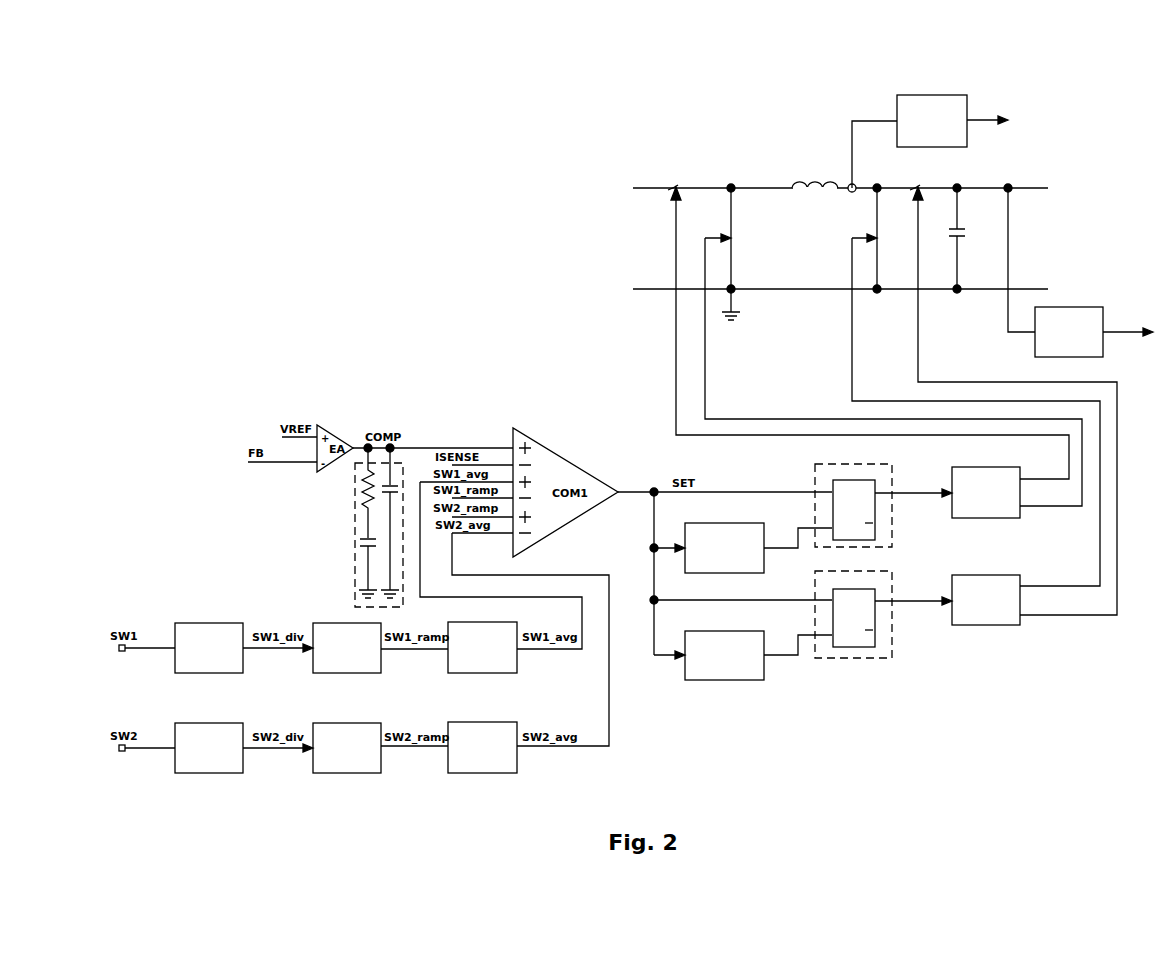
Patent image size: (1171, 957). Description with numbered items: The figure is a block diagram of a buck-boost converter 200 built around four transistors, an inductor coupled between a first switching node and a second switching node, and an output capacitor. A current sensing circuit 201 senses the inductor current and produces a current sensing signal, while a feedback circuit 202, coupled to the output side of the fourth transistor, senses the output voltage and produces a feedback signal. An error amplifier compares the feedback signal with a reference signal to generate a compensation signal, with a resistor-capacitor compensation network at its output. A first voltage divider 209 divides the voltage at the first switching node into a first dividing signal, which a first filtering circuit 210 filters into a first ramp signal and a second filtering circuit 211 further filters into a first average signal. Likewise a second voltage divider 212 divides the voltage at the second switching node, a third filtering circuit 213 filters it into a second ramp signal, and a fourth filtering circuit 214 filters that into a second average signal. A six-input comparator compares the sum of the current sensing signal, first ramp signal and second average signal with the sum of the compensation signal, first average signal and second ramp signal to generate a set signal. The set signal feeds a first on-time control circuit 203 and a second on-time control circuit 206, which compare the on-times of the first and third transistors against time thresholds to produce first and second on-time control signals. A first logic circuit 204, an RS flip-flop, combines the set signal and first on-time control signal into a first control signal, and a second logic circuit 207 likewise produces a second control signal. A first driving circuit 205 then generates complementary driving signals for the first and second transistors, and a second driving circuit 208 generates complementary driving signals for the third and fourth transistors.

The buck-boost converter 200 is at (1102, 78).
The current sensing circuit 201 is at (914, 148).
The feedback circuit 202 is at (1049, 358).
The first on-time control circuit 203 is at (701, 574).
The first logic circuit 204 is at (834, 548).
The first driving circuit 205 is at (959, 519).
The second on-time control circuit 206 is at (697, 680).
The second logic circuit 207 is at (824, 658).
The second driving circuit 208 is at (959, 626).
The first voltage divider 209 is at (184, 674).
The first filtering circuit 210 is at (322, 674).
The second filtering circuit 211 is at (461, 674).
The second voltage divider 212 is at (184, 774).
The third filtering circuit 213 is at (322, 774).
The fourth filtering circuit 214 is at (461, 774).